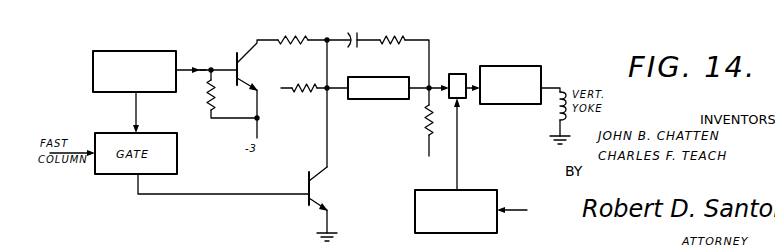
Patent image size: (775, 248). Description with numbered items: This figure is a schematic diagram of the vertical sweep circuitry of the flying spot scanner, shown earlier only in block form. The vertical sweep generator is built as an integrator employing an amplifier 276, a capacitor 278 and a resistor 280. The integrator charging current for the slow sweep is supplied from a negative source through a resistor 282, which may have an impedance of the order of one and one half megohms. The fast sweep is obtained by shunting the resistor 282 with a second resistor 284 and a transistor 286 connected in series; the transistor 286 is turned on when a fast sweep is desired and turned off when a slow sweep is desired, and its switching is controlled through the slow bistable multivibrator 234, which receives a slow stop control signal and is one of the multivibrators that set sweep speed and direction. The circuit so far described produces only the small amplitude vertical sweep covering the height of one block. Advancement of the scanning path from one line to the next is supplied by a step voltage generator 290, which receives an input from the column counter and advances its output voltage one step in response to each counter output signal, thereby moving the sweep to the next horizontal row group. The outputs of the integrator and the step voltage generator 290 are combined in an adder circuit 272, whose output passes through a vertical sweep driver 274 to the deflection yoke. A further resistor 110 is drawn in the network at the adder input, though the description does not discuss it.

The slow bistable multivibrator 234 is at (117, 50).
The transistor 286 is at (244, 79).
The second resistor 284 is at (279, 36).
The resistor 282 is at (299, 96).
The capacitor 278 is at (357, 33).
The resistor 280 is at (406, 36).
The amplifier 276 is at (373, 77).
The resistor 110 is at (434, 142).
The adder circuit 272 is at (458, 72).
The vertical sweep driver 274 is at (511, 65).
The step voltage generator 290 is at (413, 213).